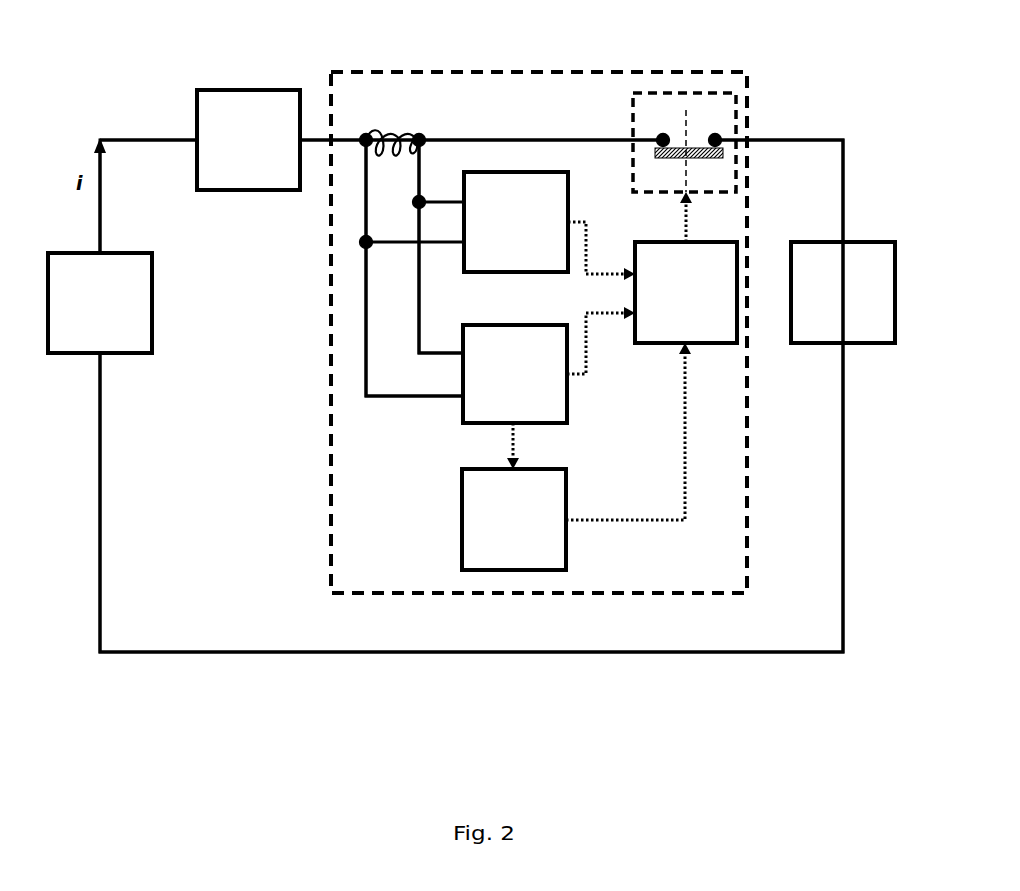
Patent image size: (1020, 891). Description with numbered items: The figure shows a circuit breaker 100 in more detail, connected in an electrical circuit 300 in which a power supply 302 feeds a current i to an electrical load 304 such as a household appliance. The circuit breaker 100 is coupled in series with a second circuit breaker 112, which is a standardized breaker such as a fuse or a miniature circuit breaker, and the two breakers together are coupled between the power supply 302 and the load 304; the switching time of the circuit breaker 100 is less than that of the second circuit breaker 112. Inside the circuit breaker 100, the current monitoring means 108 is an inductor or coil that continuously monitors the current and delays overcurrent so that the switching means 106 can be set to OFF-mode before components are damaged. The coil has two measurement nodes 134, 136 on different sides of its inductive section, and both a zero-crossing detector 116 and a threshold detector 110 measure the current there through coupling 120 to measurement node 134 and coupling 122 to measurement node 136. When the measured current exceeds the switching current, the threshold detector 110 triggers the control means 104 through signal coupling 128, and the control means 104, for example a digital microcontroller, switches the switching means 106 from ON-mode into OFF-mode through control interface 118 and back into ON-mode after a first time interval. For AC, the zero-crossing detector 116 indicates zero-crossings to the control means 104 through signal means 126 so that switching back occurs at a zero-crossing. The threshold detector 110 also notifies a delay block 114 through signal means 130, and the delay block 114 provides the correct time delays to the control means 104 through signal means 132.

The electrical circuit 300 is at (95, 88).
The power supply 302 is at (48, 277).
The electrical load 304 is at (895, 290).
The second circuit breaker 112 is at (233, 191).
The circuit breaker 100 is at (330, 588).
The control means 104 is at (668, 347).
The switching means 106 is at (633, 128).
The current monitoring means 108 is at (404, 128).
The threshold detector 110 is at (532, 325).
The delay block 114 is at (462, 558).
The zero-crossing detector 116 is at (507, 273).
The control interface 118 is at (686, 232).
The signal coupling 120 is at (430, 400).
The signal coupling 122 is at (445, 356).
The signal means 126 is at (588, 243).
The signal coupling 128 is at (577, 380).
The signal means 130 is at (513, 455).
The signal means 132 is at (620, 522).
The measurement node 134 is at (360, 134).
The measurement node 136 is at (425, 134).